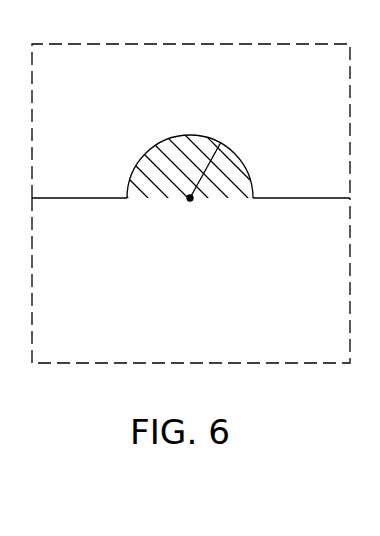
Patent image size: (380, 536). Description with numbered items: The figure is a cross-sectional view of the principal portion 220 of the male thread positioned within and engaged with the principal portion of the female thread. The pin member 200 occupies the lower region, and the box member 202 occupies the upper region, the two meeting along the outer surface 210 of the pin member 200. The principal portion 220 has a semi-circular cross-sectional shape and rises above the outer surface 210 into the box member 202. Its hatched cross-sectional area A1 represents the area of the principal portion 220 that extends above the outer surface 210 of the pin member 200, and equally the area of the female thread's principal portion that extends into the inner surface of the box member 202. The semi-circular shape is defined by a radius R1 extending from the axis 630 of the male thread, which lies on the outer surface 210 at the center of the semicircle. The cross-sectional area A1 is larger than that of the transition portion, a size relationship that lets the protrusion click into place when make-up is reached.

The pin member 200 is at (200, 291).
The box member 202 is at (158, 83).
The outer surface 210 is at (95, 197).
The principal portion 220 is at (254, 194).
The axis 630 is at (190, 201).
The radius R1 is at (186, 134).
The cross-sectional area A1 is at (233, 167).